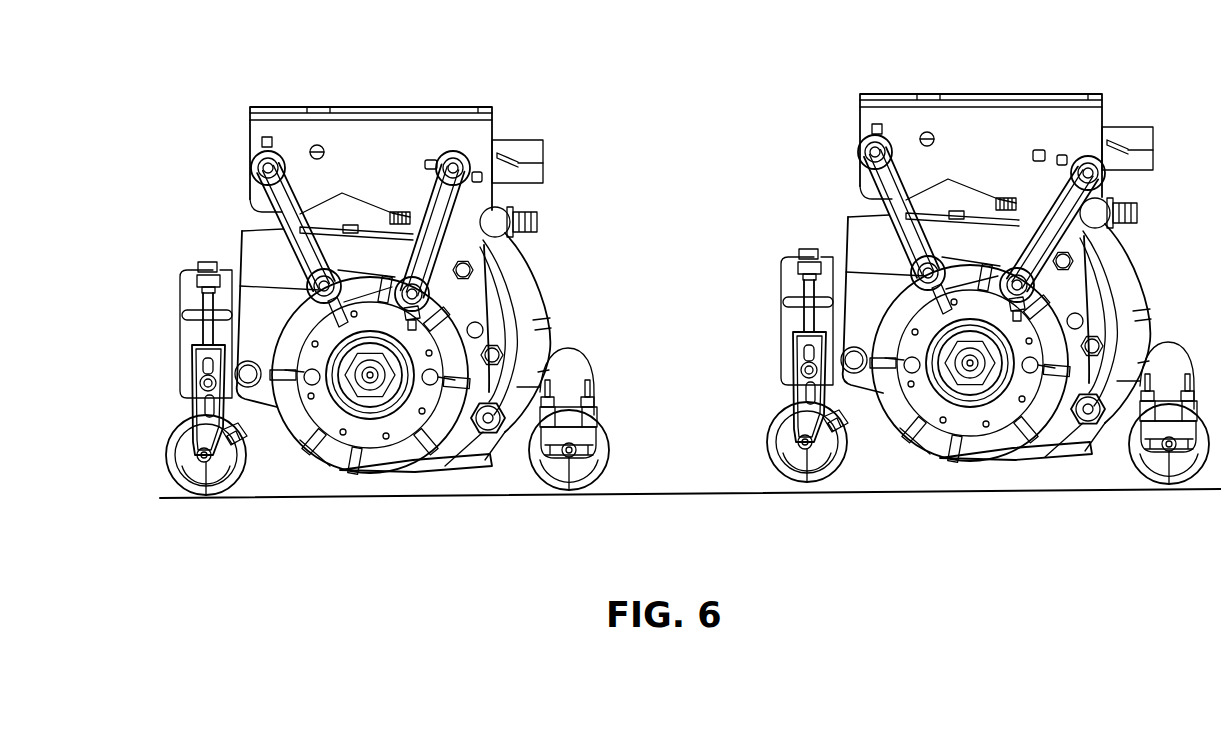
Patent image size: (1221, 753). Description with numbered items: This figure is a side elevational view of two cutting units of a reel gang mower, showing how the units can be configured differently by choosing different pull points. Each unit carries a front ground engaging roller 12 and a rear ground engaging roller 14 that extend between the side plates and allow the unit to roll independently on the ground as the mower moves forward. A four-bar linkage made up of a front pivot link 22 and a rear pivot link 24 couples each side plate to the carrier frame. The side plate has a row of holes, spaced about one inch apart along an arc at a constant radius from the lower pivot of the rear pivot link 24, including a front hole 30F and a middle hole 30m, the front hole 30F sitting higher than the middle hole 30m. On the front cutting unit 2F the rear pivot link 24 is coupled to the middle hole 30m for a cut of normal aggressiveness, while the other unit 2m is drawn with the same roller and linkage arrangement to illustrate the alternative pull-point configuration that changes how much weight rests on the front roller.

The front cutting unit 2F is at (341, 100).
The middle grinding machine 2m is at (960, 86).
The front ground engaging roller 12 is at (166, 468).
The rear ground engaging roller 14 is at (613, 443).
The front pivot link 22 is at (283, 221).
The rear pivot link 24 is at (486, 203).
The front hole 30F is at (431, 160).
The middle hole 30m is at (478, 172).